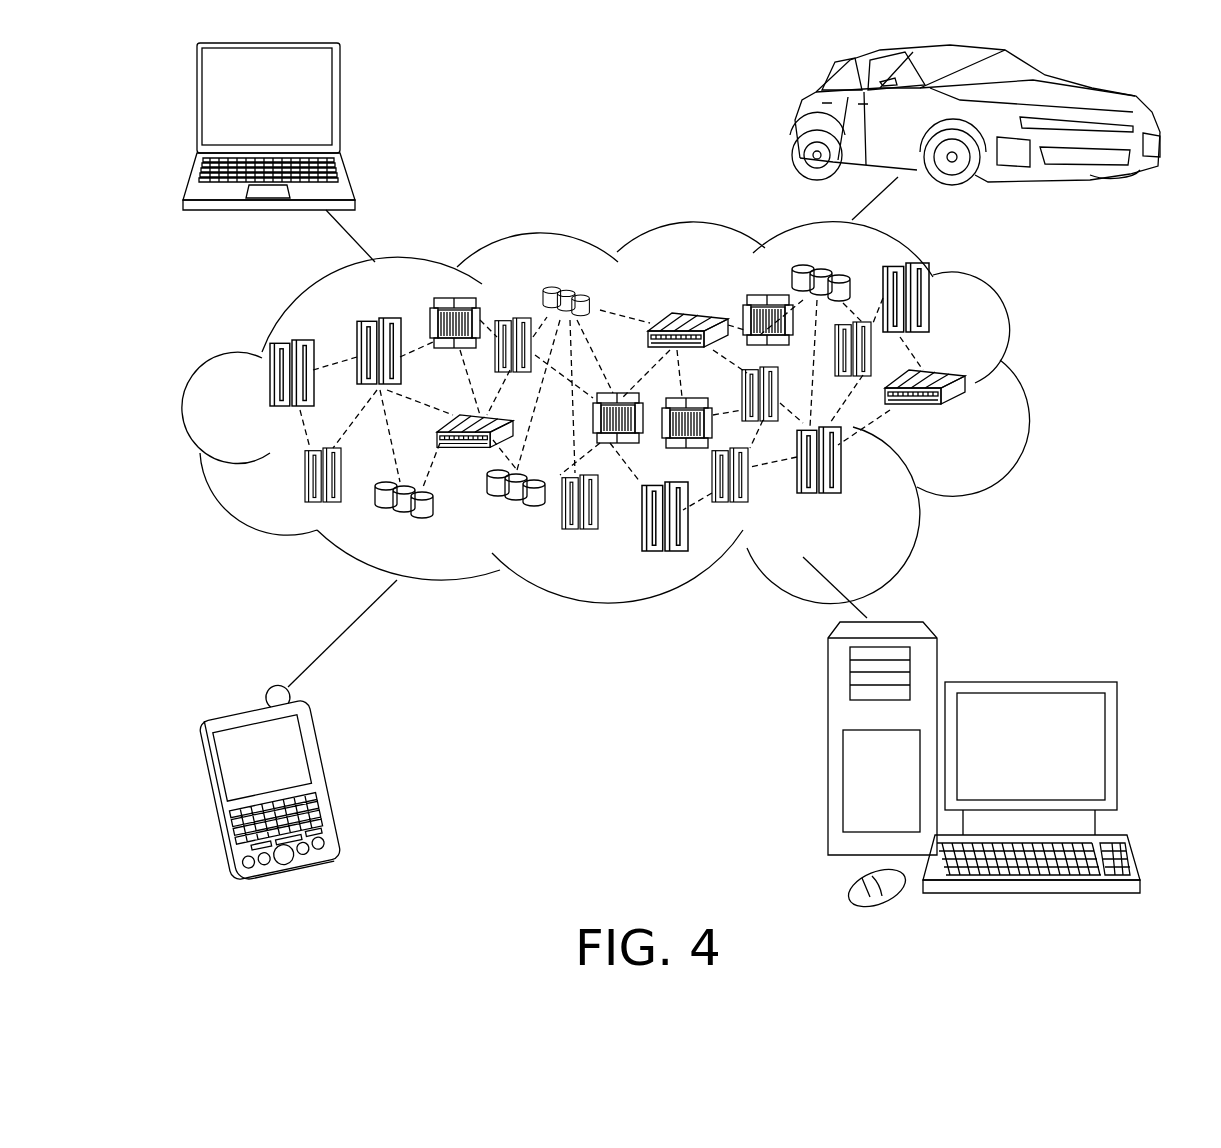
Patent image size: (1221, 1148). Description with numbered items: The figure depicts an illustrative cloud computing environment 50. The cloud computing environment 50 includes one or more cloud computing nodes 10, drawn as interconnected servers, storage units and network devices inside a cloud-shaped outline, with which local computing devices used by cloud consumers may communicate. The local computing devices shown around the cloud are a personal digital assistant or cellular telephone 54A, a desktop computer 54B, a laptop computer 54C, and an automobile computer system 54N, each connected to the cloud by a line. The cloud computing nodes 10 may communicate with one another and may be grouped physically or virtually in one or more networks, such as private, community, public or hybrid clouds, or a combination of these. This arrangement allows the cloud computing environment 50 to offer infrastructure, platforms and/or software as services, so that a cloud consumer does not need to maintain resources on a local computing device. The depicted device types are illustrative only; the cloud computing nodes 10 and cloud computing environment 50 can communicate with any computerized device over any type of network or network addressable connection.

The laptop computer 54C is at (343, 107).
The automobile computer system 54N is at (800, 121).
The personal digital assistant or cellular telephone 54A is at (332, 778).
The desktop computer 54B is at (1028, 680).
The cloud computing environment 50 is at (1027, 387).
The cloud computing nodes 10 is at (968, 418).